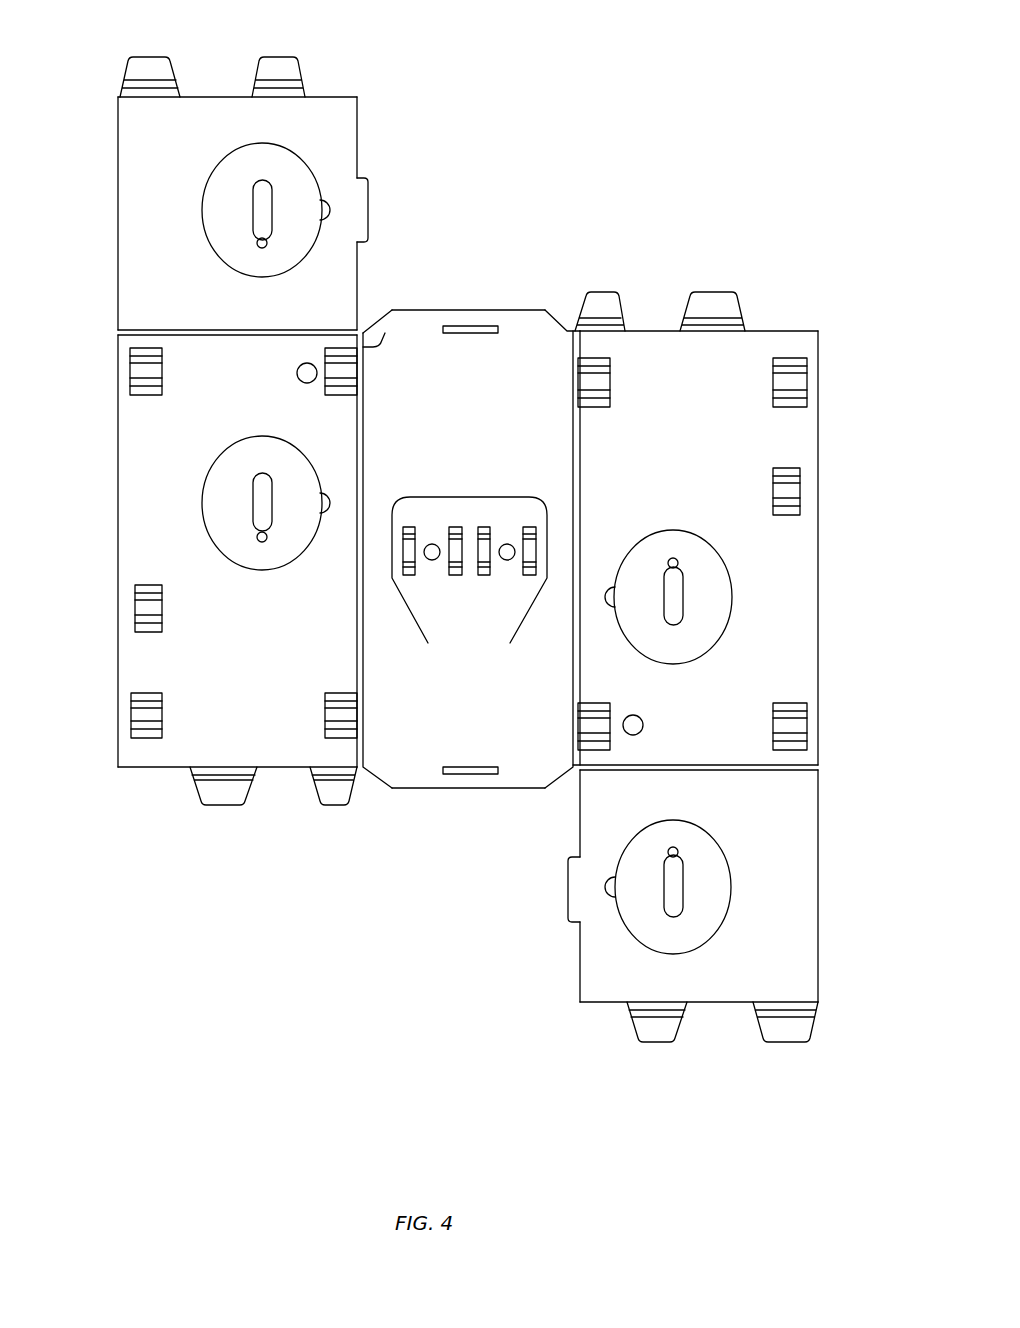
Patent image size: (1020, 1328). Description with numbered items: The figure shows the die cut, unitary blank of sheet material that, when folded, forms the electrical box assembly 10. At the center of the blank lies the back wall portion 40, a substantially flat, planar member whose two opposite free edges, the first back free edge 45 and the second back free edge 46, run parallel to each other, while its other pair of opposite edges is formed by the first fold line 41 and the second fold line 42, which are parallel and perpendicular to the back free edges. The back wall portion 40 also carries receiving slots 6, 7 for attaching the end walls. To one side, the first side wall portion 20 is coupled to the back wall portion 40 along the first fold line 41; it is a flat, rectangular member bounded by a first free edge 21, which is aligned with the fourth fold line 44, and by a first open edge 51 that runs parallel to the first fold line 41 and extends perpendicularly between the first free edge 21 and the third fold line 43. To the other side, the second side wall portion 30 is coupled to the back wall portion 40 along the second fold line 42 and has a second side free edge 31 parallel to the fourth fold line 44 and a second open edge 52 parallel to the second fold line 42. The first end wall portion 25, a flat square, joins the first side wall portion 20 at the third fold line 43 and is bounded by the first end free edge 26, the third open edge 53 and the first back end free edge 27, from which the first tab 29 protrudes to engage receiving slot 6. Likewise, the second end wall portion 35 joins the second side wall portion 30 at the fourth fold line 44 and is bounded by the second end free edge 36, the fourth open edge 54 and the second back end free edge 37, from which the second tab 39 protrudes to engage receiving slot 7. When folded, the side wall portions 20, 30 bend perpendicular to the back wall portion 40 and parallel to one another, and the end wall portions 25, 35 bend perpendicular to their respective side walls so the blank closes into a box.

The electrical box assembly 10 is at (822, 292).
The first side wall portion 20 is at (160, 440).
The first free edge 21 is at (158, 767).
The first end wall portion 25 is at (175, 243).
The first end free edge 26 is at (225, 97).
The first back end free edge 27 is at (358, 122).
The first tab 29 is at (368, 205).
The second side wall portion 30 is at (760, 440).
The second side free edge 31 is at (768, 331).
The second end wall portion 35 is at (765, 815).
The second end free edge 36 is at (727, 1002).
The second back end free edge 37 is at (580, 975).
The second tab 39 is at (568, 889).
The back wall portion 40 is at (548, 655).
The first fold line 41 is at (383, 340).
The second fold line 42 is at (575, 333).
The third fold line 43 is at (118, 332).
The fourth fold line 44 is at (815, 768).
The first back free edge 45 is at (510, 790).
The second back free edge 46 is at (517, 310).
The first open edge 51 is at (118, 722).
The second open edge 52 is at (818, 689).
The third open edge 53 is at (118, 278).
The fourth open edge 54 is at (818, 962).
The receiving slot 6 is at (462, 326).
The receiving slot 7 is at (466, 777).